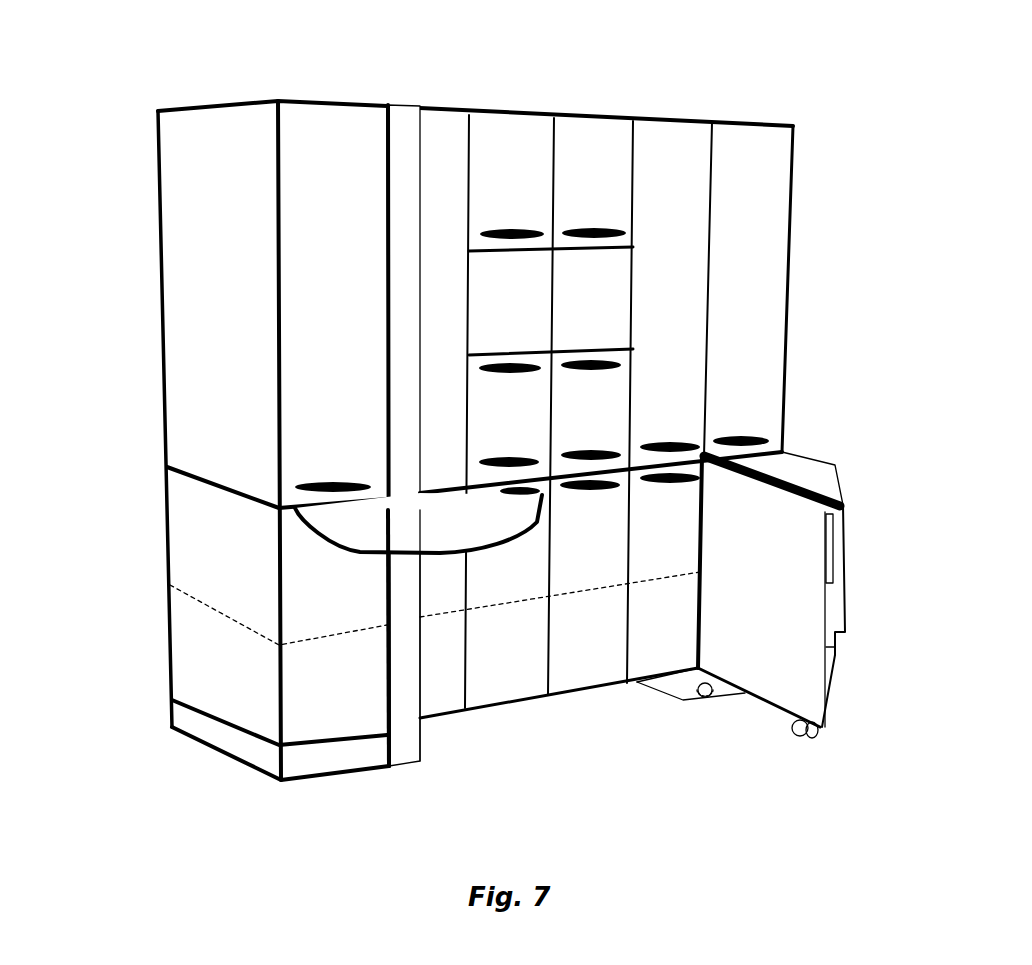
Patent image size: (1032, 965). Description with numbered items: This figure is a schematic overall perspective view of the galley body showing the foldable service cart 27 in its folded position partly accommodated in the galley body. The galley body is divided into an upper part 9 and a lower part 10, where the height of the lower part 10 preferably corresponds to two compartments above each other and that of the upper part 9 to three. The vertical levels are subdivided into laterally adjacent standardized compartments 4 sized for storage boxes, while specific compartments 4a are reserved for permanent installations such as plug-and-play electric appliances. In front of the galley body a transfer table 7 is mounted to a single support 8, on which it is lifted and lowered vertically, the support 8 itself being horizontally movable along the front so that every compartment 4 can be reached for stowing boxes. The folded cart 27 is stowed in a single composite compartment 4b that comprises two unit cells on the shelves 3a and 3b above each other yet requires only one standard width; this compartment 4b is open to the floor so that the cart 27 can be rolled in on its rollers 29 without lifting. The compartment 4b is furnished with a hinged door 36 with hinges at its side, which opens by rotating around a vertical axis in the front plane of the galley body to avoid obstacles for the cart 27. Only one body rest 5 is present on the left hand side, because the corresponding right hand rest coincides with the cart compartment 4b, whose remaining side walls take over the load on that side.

The upper part 9 is at (128, 236).
The compartment 4 is at (342, 330).
The compartment for electric appliances 4a is at (519, 128).
The cart compartment 4b is at (838, 482).
The support 8 is at (398, 117).
The lower part 10 is at (132, 508).
The lowermost vertical level 3a is at (188, 700).
The vertical level 3b is at (193, 601).
The body rest 5 is at (227, 738).
The transfer table 7 is at (346, 555).
The hinged door 36 is at (812, 455).
The service cart 27 is at (742, 730).
The rollers 29 is at (702, 700).